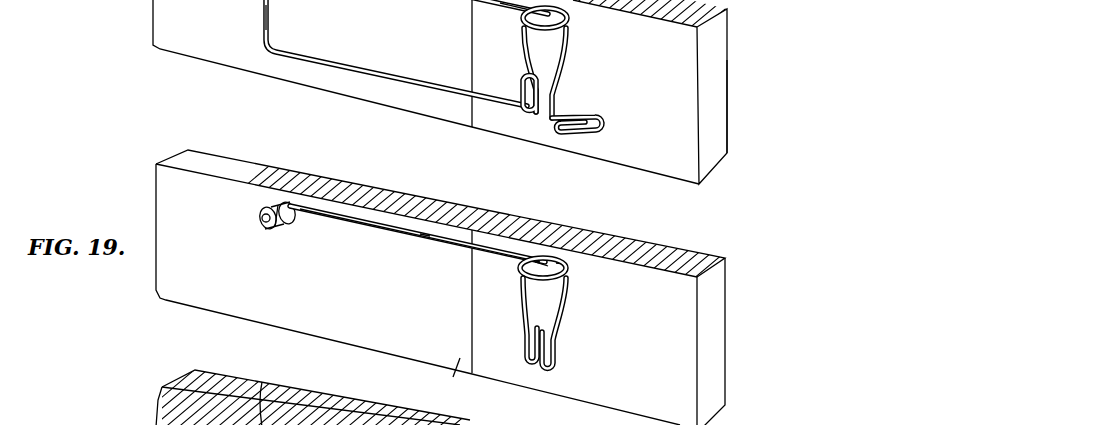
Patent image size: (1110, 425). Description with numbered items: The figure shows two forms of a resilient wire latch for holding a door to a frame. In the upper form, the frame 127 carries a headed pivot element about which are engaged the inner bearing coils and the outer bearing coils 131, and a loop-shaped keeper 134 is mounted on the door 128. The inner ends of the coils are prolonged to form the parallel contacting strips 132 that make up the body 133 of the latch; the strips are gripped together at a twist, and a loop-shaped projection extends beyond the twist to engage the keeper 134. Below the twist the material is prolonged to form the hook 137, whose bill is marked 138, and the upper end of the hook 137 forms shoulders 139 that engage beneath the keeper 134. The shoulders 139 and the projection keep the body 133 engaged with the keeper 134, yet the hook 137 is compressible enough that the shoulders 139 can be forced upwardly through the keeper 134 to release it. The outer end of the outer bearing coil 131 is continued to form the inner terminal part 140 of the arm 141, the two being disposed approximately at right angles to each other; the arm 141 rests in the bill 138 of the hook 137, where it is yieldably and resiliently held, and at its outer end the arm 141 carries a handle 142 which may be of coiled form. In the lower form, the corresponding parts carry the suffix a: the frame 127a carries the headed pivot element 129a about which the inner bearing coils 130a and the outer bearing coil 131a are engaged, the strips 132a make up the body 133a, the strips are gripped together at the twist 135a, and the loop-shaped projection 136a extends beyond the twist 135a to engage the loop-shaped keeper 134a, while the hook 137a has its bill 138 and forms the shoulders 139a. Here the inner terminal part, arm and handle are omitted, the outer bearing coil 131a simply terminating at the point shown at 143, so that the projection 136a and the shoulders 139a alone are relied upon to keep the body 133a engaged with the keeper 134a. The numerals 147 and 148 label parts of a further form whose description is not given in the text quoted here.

In FIG. 18, the frame 127 is at (163, 10).
In FIG. 19, the frame 127a is at (163, 243).
In FIG. 18, the door 128 is at (708, 127).
In FIG. 19, the door 128 is at (720, 372).
In FIG. 19, the headed pivot element 129a is at (265, 226).
In FIG. 19, the inner bearing coils 130a is at (315, 220).
In FIG. 18, the outer bearing coils 131 is at (287, 6).
In FIG. 19, the outer bearing coil 131a is at (278, 228).
In FIG. 18, the parallel contacting strips 132 is at (456, 12).
In FIG. 19, the parallel contacting strips 132a is at (366, 218).
In FIG. 18, the body 133 is at (482, 14).
In FIG. 19, the body 133a is at (425, 222).
In FIG. 18, the loop-shaped keeper 134 is at (570, 23).
In FIG. 19, the loop-shaped keeper 134a is at (570, 273).
In FIG. 19, the twist 135a is at (549, 262).
In FIG. 19, the loop-shaped projection 136a is at (566, 262).
In FIG. 18, the hook 137 is at (561, 93).
In FIG. 19, the hook 137a is at (568, 337).
In FIG. 18, the bill of the hook 138 is at (528, 85).
In FIG. 19, the bill of the hook 138 is at (526, 340).
In FIG. 18, the shoulders 139 is at (545, 48).
In FIG. 19, the shoulders 139a is at (552, 293).
In FIG. 18, the inner terminal part 140 is at (262, 17).
In FIG. 18, the arm 141 is at (280, 49).
In FIG. 18, the handle 142 is at (613, 108).
In FIG. 19, the terminating point of outer bearing coil 143 is at (258, 218).
In FIG. 20, the hatched wall top 147 is at (292, 424).
In FIG. 20, the wall element 148 is at (267, 394).